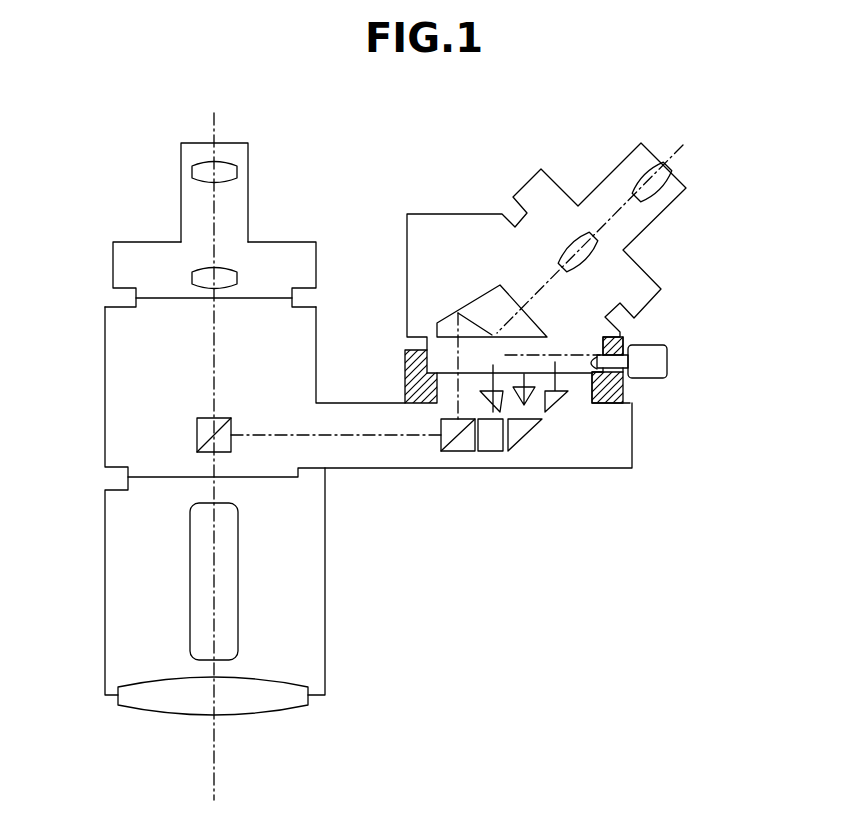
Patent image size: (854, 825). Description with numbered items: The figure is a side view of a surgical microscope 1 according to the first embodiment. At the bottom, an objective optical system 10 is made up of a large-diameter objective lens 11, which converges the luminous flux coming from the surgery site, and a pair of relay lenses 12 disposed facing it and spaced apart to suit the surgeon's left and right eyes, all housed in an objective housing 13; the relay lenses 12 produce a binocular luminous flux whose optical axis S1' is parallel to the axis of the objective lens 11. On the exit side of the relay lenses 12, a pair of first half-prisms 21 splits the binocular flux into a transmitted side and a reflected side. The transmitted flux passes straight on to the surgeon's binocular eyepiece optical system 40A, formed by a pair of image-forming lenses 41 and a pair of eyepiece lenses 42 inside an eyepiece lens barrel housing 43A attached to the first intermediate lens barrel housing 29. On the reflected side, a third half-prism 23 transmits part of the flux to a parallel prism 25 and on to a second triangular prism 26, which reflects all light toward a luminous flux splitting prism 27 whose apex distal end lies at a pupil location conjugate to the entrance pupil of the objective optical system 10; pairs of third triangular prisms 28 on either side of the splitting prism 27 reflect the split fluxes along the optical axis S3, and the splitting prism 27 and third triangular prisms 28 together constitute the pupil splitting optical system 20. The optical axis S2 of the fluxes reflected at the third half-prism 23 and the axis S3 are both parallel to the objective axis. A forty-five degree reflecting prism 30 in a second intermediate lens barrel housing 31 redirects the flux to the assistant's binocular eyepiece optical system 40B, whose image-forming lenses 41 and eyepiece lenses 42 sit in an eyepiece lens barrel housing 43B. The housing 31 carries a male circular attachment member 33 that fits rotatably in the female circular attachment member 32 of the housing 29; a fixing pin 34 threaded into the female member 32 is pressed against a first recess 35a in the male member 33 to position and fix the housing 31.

The surgical microscope 1 is at (614, 614).
The objective optical system 10 is at (291, 602).
The objective lens 11 is at (290, 714).
The relay lenses 12 is at (233, 597).
The objective housing 13 is at (324, 565).
The pupil splitting optical system 20 is at (526, 462).
The first half-prisms 21 is at (197, 421).
The third half-prism 23 is at (455, 452).
The parallel prism 25 is at (489, 452).
The second triangular prism 26 is at (518, 452).
The luminous flux splitting prism 27 is at (537, 390).
The third triangular prisms 28 is at (553, 408).
The first intermediate lens barrel housing 29 is at (547, 470).
The 45° reflecting prism 30 is at (487, 293).
The second intermediate lens barrel housing 31 is at (407, 238).
The female circular attachment member 32 is at (405, 383).
The male circular attachment member 33 is at (433, 353).
The fixing pin 34 is at (667, 356).
The first recess 35a is at (623, 381).
The surgeon's binocular eyepiece optical system 40A is at (246, 206).
The assistant's binocular eyepiece optical system 40B is at (647, 222).
The image-forming lenses 41 is at (238, 276).
The eyepiece lenses 42 is at (238, 170).
The eyepiece lens barrel housing 43A is at (157, 240).
The eyepiece lens barrel housing 43B is at (571, 197).
The optical axis of the binocular luminous flux S1' is at (254, 456).
The optical axis of the reflected luminous fluxes S2 is at (458, 368).
The optical axis of the pupil-split binocular luminous flux S3 is at (492, 368).